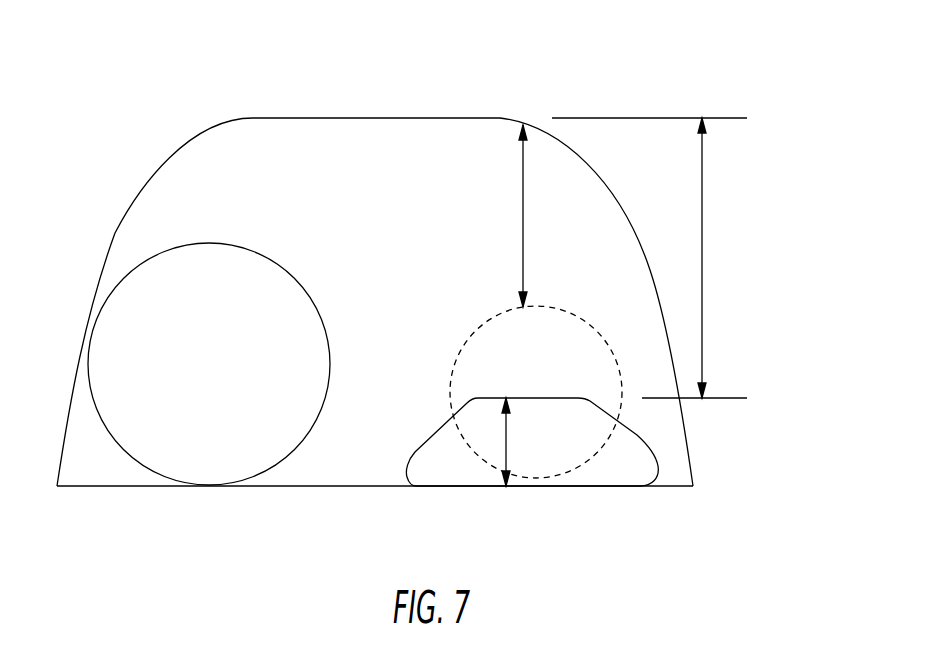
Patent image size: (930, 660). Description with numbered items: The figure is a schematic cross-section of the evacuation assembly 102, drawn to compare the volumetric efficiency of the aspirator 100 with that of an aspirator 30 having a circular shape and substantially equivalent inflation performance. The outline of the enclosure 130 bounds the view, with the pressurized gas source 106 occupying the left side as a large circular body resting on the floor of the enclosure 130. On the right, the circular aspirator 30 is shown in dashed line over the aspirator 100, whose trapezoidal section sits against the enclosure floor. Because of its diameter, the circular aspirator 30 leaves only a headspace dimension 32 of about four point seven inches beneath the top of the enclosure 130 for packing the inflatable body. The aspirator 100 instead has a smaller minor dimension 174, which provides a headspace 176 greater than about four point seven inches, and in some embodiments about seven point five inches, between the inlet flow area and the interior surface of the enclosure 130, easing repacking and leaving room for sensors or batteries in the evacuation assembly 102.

The evacuation assembly 102 is at (122, 535).
The enclosure 130 is at (358, 118).
The pressurized gas source 106 is at (217, 377).
The aspirator having a circular shape 30 is at (450, 390).
The aspirator 100 is at (637, 440).
The headspace dimension 32 is at (523, 213).
The headspace 176 is at (702, 222).
The minor dimension 174 is at (506, 442).